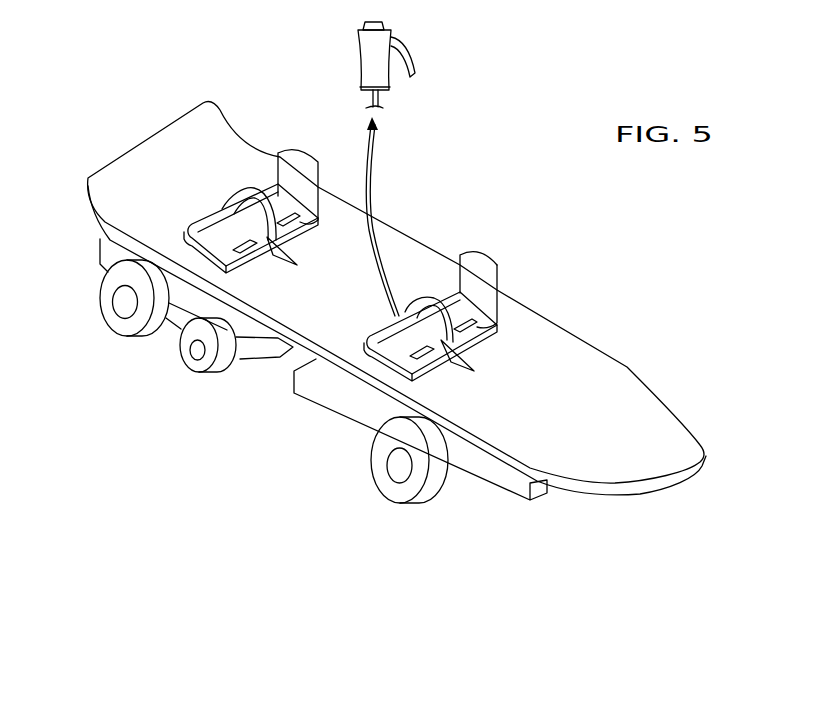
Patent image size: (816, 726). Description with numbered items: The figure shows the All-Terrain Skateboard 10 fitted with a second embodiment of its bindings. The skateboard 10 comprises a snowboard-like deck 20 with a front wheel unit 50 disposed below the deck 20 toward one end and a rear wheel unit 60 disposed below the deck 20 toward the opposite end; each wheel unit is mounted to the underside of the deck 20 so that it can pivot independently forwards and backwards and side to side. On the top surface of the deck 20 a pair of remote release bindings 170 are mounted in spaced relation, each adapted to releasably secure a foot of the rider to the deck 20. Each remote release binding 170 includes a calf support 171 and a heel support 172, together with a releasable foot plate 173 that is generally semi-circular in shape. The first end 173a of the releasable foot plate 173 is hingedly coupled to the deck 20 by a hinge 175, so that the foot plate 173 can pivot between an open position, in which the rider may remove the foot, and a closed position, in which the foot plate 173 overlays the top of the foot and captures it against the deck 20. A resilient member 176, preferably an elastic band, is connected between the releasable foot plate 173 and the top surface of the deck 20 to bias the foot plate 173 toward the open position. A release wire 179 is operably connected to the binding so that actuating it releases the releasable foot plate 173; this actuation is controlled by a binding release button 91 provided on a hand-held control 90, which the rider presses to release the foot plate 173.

The All-Terrain Skateboard 10 is at (520, 157).
The deck 20 is at (400, 247).
The front wheel unit 50 is at (357, 485).
The rear wheel unit 60 is at (127, 353).
The hand-held control 90 is at (421, 56).
The binding release button 91 is at (380, 23).
The remote release binding 170 is at (289, 136).
The calf support 171 is at (498, 292).
The heel support 172 is at (482, 332).
The releasable foot plate 173 is at (243, 191).
The first end 173a is at (277, 248).
The hinge 175 is at (453, 353).
The resilient member 176 is at (467, 362).
The release wire 179 is at (383, 272).